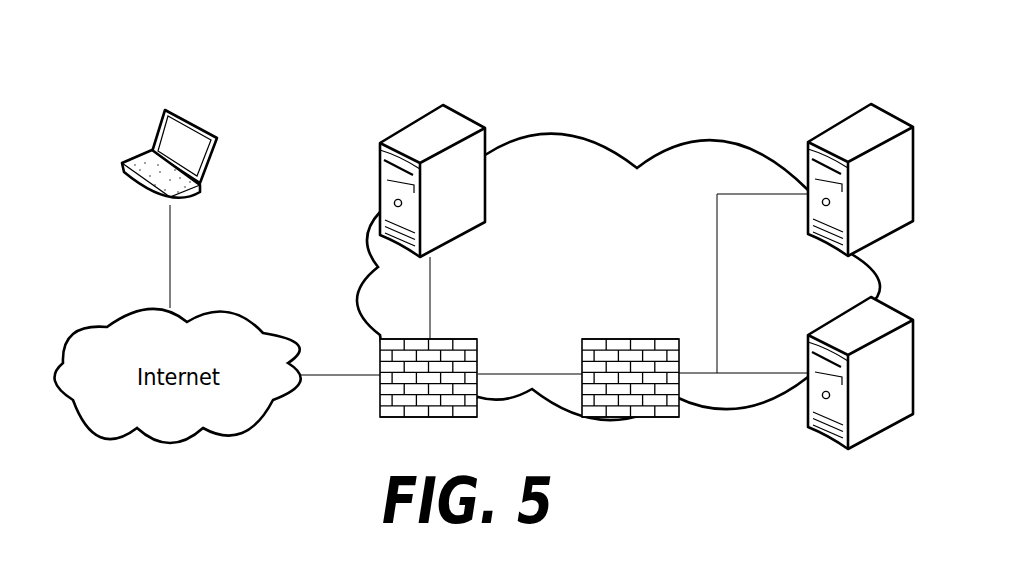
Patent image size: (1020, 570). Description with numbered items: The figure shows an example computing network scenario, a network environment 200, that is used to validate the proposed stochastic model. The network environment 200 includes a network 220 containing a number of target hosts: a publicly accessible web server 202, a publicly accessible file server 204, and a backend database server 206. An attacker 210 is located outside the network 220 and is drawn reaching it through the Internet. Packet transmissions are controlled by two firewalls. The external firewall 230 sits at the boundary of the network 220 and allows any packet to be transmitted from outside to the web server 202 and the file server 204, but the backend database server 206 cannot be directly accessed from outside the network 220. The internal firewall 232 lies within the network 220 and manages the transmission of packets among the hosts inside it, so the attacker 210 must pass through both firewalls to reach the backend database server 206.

The network environment 200 is at (100, 41).
The attacker 210 is at (143, 153).
The network 220 is at (365, 279).
The backend database server 206 is at (380, 152).
The publicly accessible web server 202 is at (808, 153).
The publicly accessible file server 204 is at (808, 350).
The external firewall 230 is at (380, 350).
The internal firewall 232 is at (582, 350).